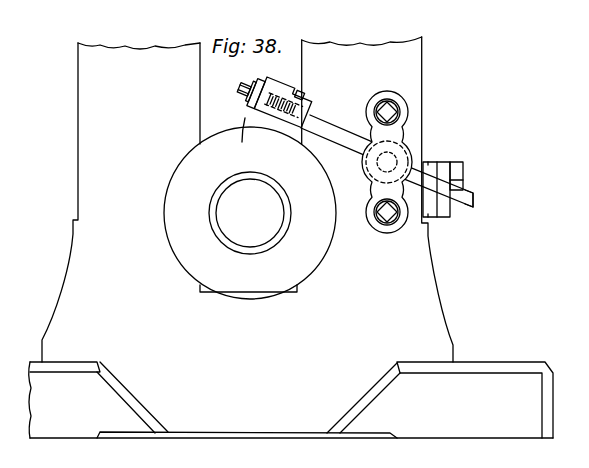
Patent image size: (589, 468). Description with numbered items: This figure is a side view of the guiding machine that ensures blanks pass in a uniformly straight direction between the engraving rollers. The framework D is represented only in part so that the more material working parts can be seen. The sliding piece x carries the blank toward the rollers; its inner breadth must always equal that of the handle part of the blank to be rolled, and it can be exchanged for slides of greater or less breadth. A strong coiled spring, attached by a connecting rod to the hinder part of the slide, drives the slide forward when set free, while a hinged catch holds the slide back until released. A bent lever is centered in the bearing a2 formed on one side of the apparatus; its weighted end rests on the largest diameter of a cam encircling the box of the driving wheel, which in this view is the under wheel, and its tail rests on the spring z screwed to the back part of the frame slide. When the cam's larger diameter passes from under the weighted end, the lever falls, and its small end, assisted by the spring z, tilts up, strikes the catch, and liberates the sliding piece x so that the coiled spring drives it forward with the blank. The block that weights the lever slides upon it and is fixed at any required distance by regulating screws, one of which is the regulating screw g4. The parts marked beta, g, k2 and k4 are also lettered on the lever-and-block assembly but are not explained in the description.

The framework D is at (291, 237).
The sliding piece x is at (441, 189).
The guide piece g is at (475, 182).
The lever arm beta is at (387, 161).
The spring z is at (474, 204).
The bearing a2 is at (387, 162).
The valve block k4 is at (303, 88).
The adjusting bolt k2 is at (250, 81).
The regulating screw g4 is at (309, 95).